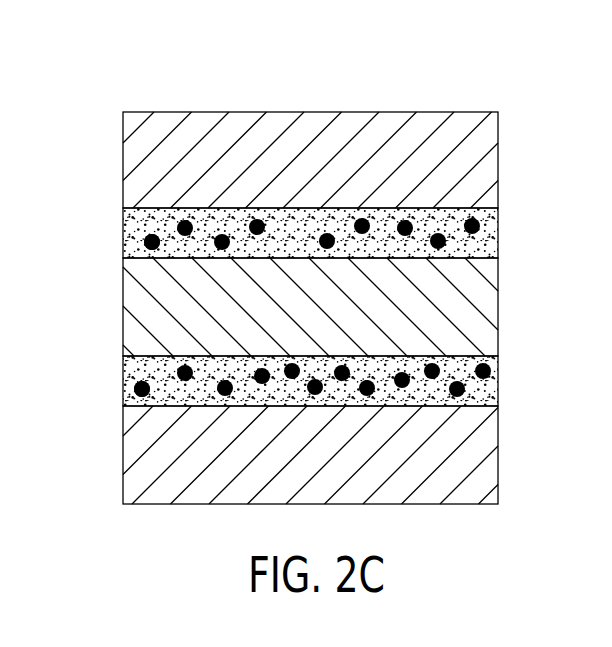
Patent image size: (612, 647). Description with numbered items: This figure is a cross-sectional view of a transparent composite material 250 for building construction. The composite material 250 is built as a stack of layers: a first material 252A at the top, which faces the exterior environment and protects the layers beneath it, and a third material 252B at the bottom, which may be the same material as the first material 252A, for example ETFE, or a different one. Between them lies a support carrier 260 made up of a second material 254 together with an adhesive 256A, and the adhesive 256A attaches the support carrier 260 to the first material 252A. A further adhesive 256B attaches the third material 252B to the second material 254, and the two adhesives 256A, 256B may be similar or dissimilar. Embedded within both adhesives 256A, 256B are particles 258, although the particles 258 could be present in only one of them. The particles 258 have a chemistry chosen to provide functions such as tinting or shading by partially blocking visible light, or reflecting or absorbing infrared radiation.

The composite material 250 is at (115, 88).
The first material 252A is at (488, 170).
The third material 252B is at (488, 459).
The second material 254 is at (488, 318).
The adhesive 256A is at (488, 233).
The adhesive 256B is at (488, 391).
The particles 258 is at (148, 237).
The support carrier 260 is at (105, 212).